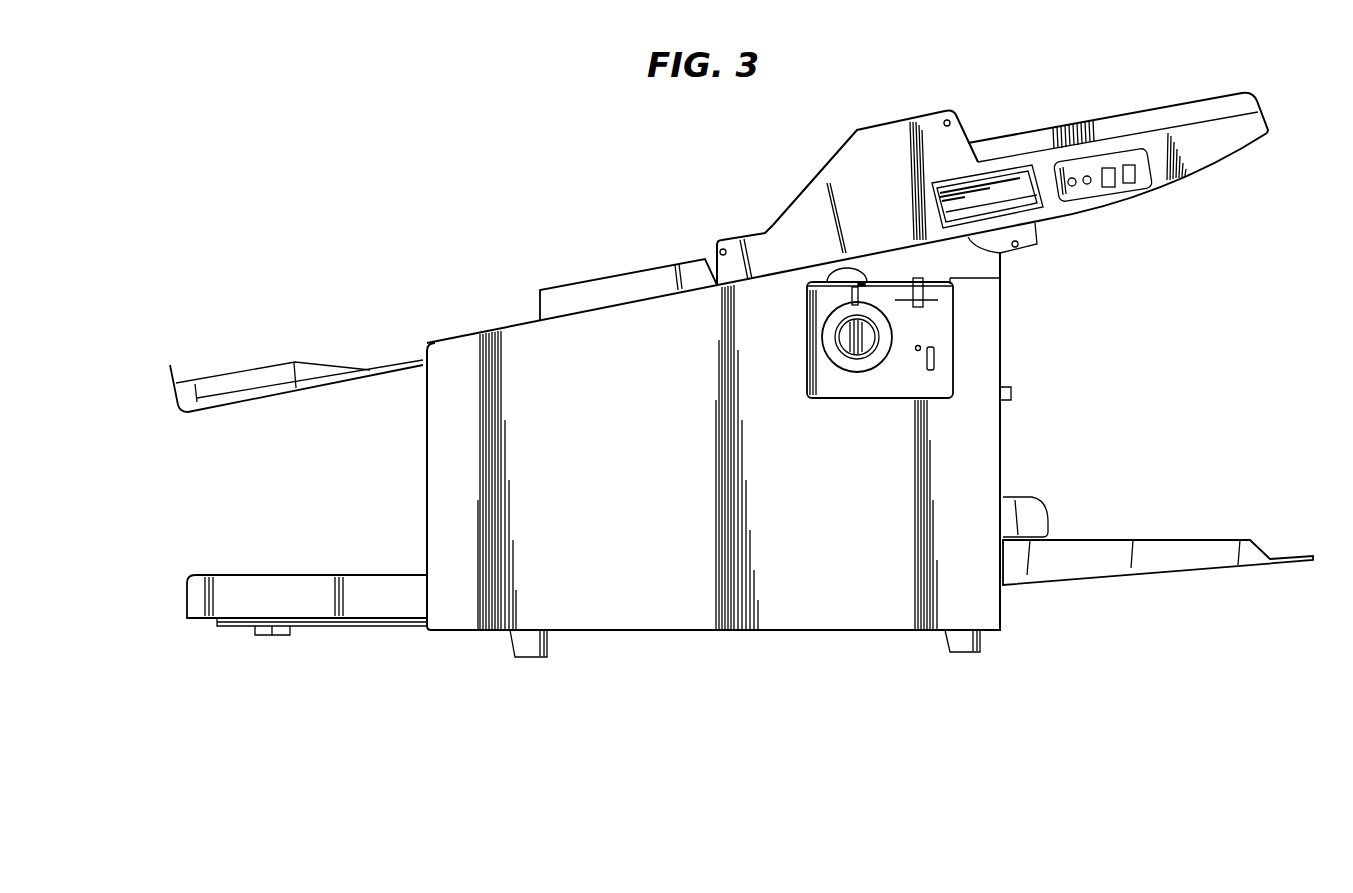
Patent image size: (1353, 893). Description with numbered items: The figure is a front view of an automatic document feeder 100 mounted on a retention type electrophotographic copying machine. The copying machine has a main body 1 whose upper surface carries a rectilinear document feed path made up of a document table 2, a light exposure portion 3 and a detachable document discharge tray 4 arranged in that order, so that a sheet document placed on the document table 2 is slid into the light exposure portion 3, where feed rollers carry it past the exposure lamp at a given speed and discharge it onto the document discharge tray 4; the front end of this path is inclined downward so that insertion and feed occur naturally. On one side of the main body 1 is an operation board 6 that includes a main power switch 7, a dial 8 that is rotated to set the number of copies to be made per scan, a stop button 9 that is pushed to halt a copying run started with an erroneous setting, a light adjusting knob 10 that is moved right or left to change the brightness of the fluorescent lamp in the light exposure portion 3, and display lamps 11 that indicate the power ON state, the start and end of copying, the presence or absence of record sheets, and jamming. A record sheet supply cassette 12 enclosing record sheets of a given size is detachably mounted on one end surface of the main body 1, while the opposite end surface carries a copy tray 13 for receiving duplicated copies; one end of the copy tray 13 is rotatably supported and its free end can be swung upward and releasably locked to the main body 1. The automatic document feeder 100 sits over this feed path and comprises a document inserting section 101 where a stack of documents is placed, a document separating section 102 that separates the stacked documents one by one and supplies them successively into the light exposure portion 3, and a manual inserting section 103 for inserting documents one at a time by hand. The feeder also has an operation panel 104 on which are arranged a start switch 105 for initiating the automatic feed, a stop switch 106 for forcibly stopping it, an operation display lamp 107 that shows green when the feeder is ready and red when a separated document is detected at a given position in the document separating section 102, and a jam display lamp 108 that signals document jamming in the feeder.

The main body 1 is at (1012, 434).
The document table 2 is at (1003, 257).
The light exposure portion 3 is at (596, 284).
The document discharge tray 4 is at (316, 372).
The operation board 6 is at (835, 390).
The main power switch 7 is at (932, 371).
The dial 8 is at (860, 348).
The stop button 9 is at (806, 305).
The light adjusting knob 10 is at (924, 291).
The display lamps 11 is at (921, 347).
The record sheet supply cassette 12 is at (323, 585).
The copy tray 13 is at (1165, 550).
The automatic document feeder 100 is at (1178, 184).
The document inserting section 101 is at (1069, 118).
The document separating section 102 is at (922, 110).
The manual inserting section 103 is at (744, 220).
The operation panel 104 is at (1157, 164).
The start switch 105 is at (1133, 186).
The stop switch 106 is at (1108, 189).
The operation display lamp 107 is at (1089, 176).
The jam display lamp 108 is at (1068, 181).